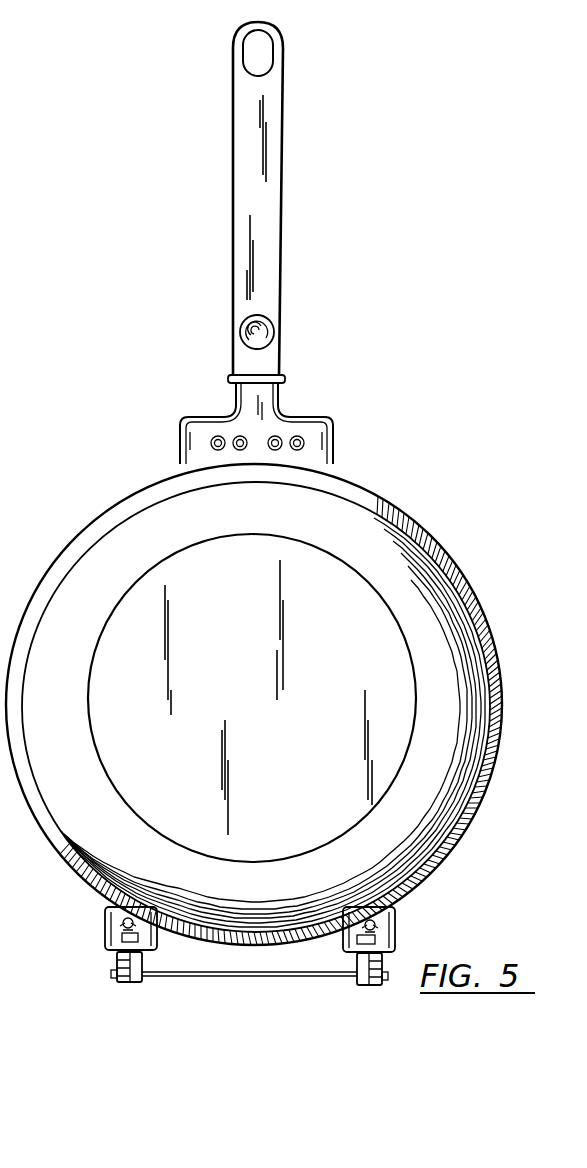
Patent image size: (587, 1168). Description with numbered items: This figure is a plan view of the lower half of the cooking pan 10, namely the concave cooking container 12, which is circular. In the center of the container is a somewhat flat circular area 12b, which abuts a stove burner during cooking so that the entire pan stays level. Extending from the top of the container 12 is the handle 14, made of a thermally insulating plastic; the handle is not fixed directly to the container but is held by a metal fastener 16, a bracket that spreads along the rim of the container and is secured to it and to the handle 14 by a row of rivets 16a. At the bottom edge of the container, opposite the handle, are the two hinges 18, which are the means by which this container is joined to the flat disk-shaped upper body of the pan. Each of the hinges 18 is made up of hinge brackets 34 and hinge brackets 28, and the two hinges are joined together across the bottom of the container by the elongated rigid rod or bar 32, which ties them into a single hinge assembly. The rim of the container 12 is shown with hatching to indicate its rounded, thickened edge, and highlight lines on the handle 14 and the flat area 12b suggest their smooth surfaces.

The cooking pan 10 is at (412, 438).
The concave cooking container 12 is at (415, 501).
The flat circular area 12b is at (378, 623).
The handle 14 is at (284, 121).
The metal fastener 16 is at (258, 407).
The rivets 16a is at (299, 438).
The hinges 18 is at (100, 921).
The hinge brackets 28 is at (142, 967).
The rod 32 is at (243, 976).
The hinge brackets 34 is at (116, 964).